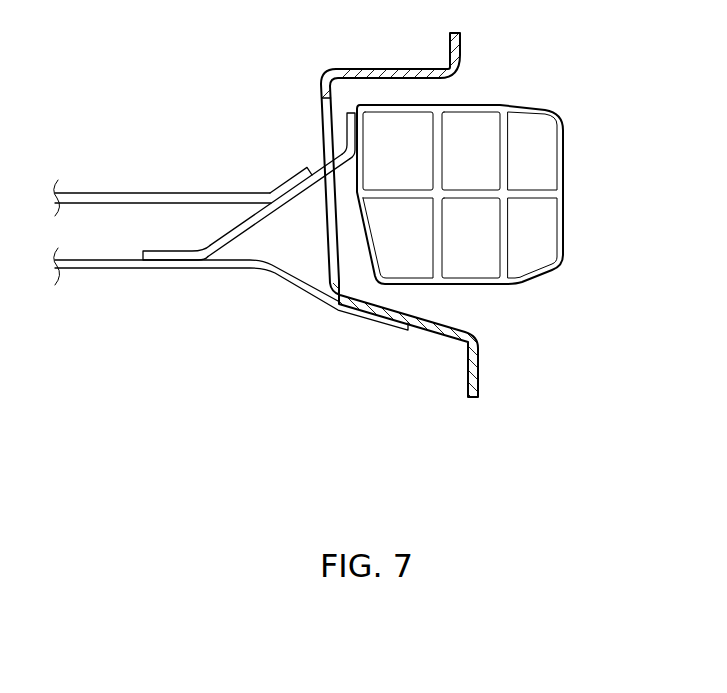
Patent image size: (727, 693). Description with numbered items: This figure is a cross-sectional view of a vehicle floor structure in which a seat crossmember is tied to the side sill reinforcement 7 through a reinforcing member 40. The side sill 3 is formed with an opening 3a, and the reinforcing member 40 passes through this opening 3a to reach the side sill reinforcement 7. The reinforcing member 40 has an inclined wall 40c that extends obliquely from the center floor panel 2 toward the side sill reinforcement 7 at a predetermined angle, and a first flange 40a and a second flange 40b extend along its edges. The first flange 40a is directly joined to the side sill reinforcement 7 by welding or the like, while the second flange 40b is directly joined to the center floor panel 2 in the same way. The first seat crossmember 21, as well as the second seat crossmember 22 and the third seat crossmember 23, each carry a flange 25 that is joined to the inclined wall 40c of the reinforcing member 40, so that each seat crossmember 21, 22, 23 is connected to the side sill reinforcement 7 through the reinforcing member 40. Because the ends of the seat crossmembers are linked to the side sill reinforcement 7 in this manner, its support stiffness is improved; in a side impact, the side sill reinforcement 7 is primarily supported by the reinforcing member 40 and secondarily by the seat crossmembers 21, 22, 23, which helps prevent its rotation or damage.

The center floor panel 2 is at (97, 268).
The side sill 3 is at (408, 210).
The opening 3a is at (328, 237).
The side sill reinforcement 7 is at (565, 128).
The first seat crossmember 21 is at (162, 168).
The second seat crossmember 22 is at (162, 198).
The third seat crossmember 23 is at (130, 193).
The flange 25 is at (283, 188).
The reinforcing member 40 is at (249, 229).
The first flange 40a is at (294, 116).
The second flange 40b is at (173, 252).
The inclined wall 40c is at (258, 223).